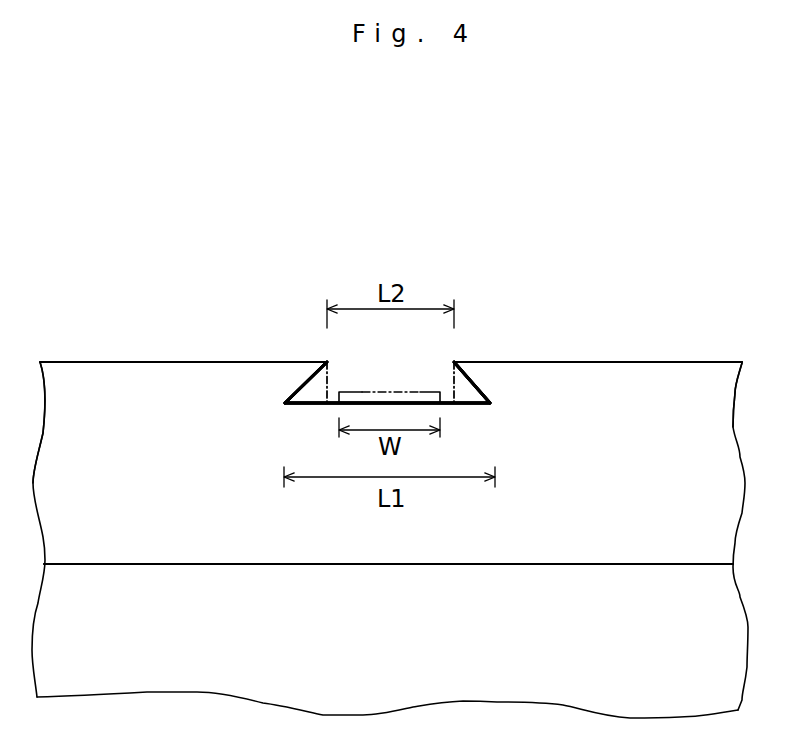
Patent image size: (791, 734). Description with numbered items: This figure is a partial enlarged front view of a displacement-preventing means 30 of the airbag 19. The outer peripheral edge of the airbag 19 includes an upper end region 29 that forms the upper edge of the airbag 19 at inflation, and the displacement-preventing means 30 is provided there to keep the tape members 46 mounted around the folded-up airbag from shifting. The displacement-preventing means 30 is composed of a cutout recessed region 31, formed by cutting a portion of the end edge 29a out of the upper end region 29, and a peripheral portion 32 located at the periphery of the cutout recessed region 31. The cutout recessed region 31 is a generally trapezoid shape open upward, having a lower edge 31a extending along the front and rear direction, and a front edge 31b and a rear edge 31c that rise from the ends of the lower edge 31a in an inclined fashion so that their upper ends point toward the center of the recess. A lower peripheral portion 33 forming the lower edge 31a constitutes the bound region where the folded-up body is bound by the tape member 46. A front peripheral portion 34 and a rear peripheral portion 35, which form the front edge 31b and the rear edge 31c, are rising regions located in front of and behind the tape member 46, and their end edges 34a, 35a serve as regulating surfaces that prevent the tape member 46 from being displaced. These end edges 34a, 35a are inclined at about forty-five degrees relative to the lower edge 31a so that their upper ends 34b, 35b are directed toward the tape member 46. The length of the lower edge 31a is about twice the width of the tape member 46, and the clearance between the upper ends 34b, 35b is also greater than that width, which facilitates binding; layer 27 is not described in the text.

The airbag 19 is at (707, 325).
The layer 27 is at (387, 422).
The upper end region 29 is at (642, 385).
The end edge 29a is at (566, 362).
The displacement-preventing means 30 is at (183, 400).
The cutout recessed region 31 is at (306, 404).
The lower edge 31a is at (477, 406).
The front edge 31b is at (306, 380).
The rear edge 31c is at (493, 393).
The peripheral portion 32 is at (292, 386).
The lower peripheral portion 33 is at (458, 412).
The front peripheral portion 34 is at (292, 377).
The end edge 34a is at (306, 382).
The upper end 34b is at (327, 362).
The rear peripheral portion 35 is at (477, 375).
The end edge 35a is at (472, 382).
The upper end 35b is at (454, 362).
The tape member 46 is at (390, 392).